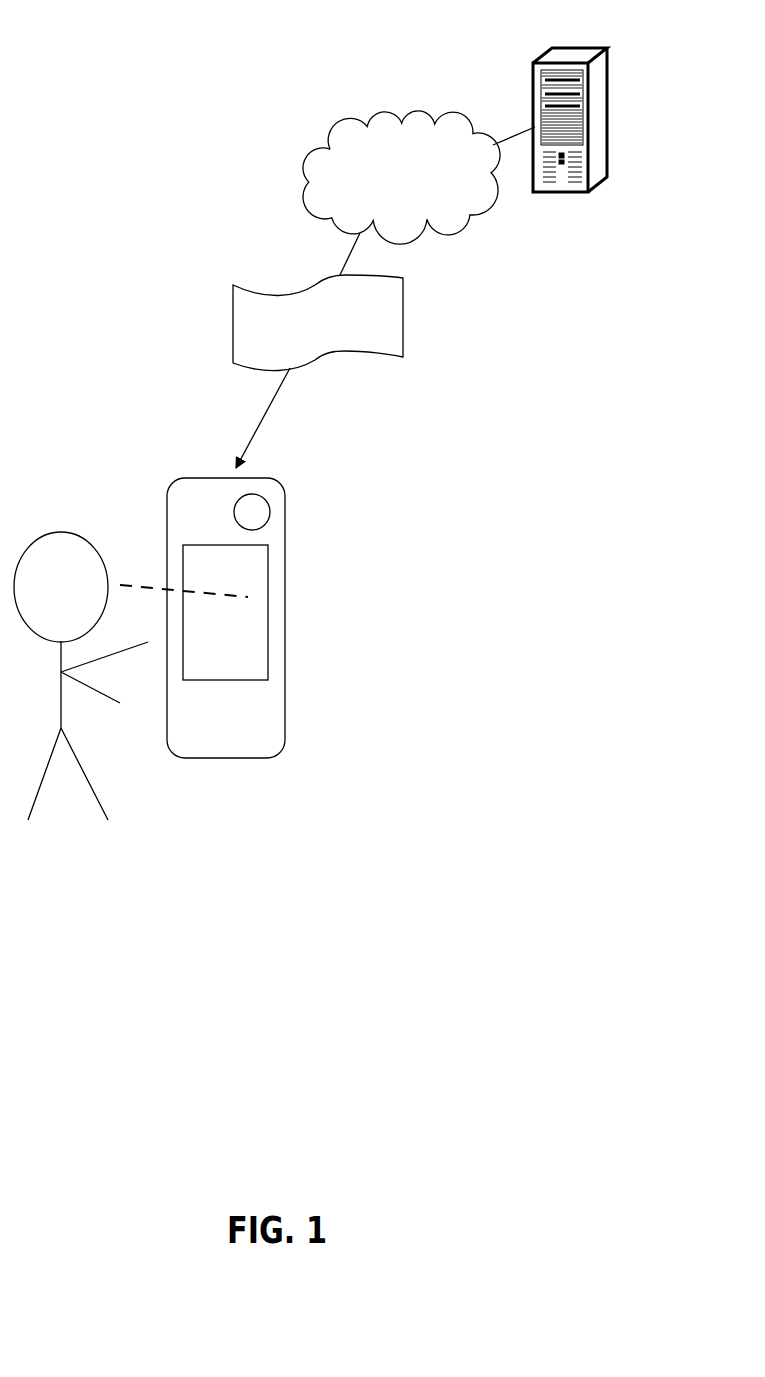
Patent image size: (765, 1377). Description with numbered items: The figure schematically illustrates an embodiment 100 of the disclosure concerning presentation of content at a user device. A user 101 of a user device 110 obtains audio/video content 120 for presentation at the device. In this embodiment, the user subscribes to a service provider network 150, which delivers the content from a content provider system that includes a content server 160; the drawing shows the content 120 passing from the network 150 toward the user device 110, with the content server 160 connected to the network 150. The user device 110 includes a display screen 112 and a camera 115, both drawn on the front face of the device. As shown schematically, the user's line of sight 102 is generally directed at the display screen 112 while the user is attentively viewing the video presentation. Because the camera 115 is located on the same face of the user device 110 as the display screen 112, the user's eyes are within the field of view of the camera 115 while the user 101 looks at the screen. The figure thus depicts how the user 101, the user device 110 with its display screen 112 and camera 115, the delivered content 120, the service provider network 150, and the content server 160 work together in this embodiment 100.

The embodiment 100 is at (308, 1201).
The user 101 is at (43, 504).
The line of sight 102 is at (148, 588).
The user device 110 is at (270, 579).
The display screen 112 is at (272, 640).
The camera 115 is at (272, 512).
The audio/video content 120 is at (233, 320).
The service provider network 150 is at (421, 181).
The content server 160 is at (535, 87).